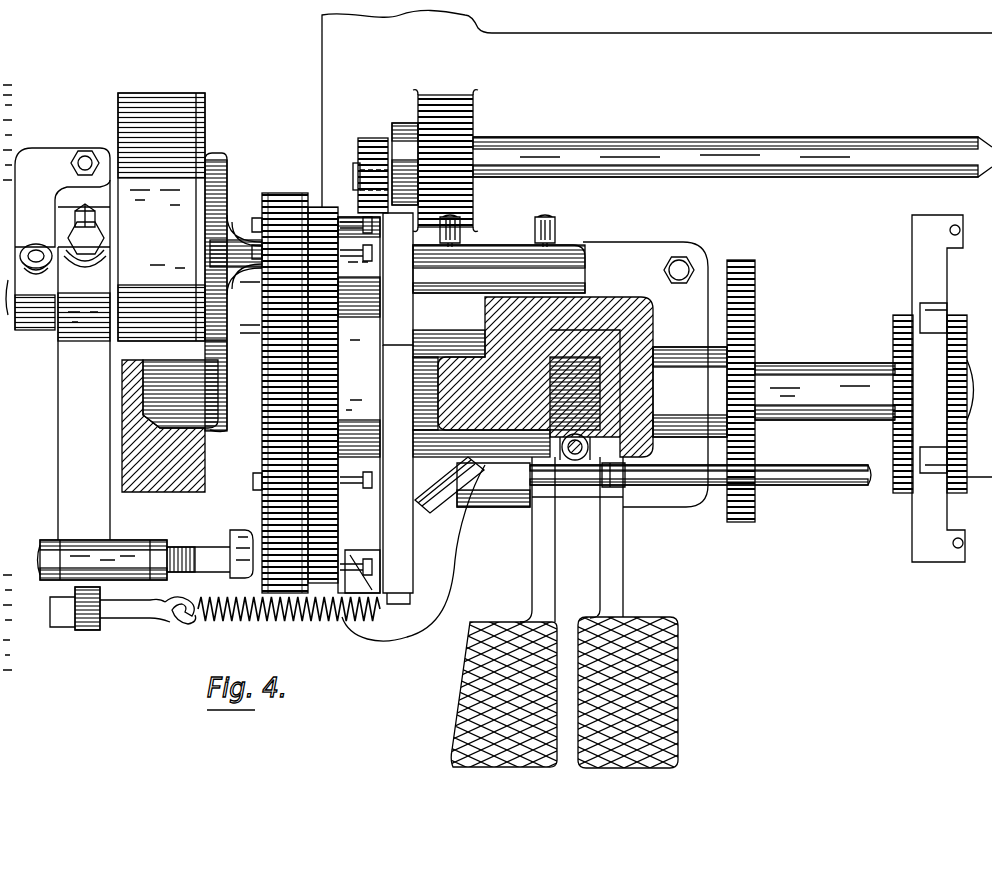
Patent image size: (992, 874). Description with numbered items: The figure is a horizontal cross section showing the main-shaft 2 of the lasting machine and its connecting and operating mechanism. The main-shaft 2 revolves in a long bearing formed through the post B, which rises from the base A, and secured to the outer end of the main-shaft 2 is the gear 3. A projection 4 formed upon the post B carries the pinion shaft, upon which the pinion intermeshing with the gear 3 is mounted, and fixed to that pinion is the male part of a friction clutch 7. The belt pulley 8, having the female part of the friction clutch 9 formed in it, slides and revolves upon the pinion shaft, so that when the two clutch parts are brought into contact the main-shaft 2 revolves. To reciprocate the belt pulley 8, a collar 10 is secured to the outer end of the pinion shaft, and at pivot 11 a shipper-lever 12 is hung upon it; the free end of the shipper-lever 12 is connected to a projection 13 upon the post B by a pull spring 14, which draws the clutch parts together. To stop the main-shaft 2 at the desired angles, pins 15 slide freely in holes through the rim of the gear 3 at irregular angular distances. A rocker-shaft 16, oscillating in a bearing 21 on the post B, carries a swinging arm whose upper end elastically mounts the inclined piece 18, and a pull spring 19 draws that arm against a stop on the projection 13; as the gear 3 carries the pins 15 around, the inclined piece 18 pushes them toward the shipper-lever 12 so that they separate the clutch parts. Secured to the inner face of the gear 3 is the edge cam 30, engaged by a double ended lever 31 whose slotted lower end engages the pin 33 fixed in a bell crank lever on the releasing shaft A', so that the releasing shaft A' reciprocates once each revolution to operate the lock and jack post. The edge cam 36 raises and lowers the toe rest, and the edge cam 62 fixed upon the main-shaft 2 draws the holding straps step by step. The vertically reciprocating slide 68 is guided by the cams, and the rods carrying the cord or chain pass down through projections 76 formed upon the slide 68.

The main-shaft 2 is at (774, 392).
The gear 3 is at (295, 383).
The projection 4 is at (458, 297).
The male part of friction clutch 7 is at (213, 388).
The belt pulley 8 is at (163, 437).
The female part of friction clutch 9 is at (200, 430).
The collar 10 is at (58, 239).
The pivot 11 is at (85, 158).
The shipper-lever 12 is at (84, 360).
The projection 13 is at (398, 474).
The pull spring 14 is at (215, 619).
The pins 15 is at (356, 396).
The rocker-shaft 16 is at (700, 485).
The inclined piece 18 is at (343, 627).
The pull spring 19 is at (146, 545).
The bearing 21 is at (472, 485).
The edge cam 30 is at (359, 405).
The double ended lever 31 is at (398, 279).
The pin 33 is at (405, 161).
The edge cam 36 is at (741, 379).
The edge cam 62 is at (942, 398).
The slide 68 is at (938, 388).
The projections 76 is at (970, 389).
The base A is at (696, 374).
The releasing shaft A' is at (732, 146).
The post B is at (545, 378).